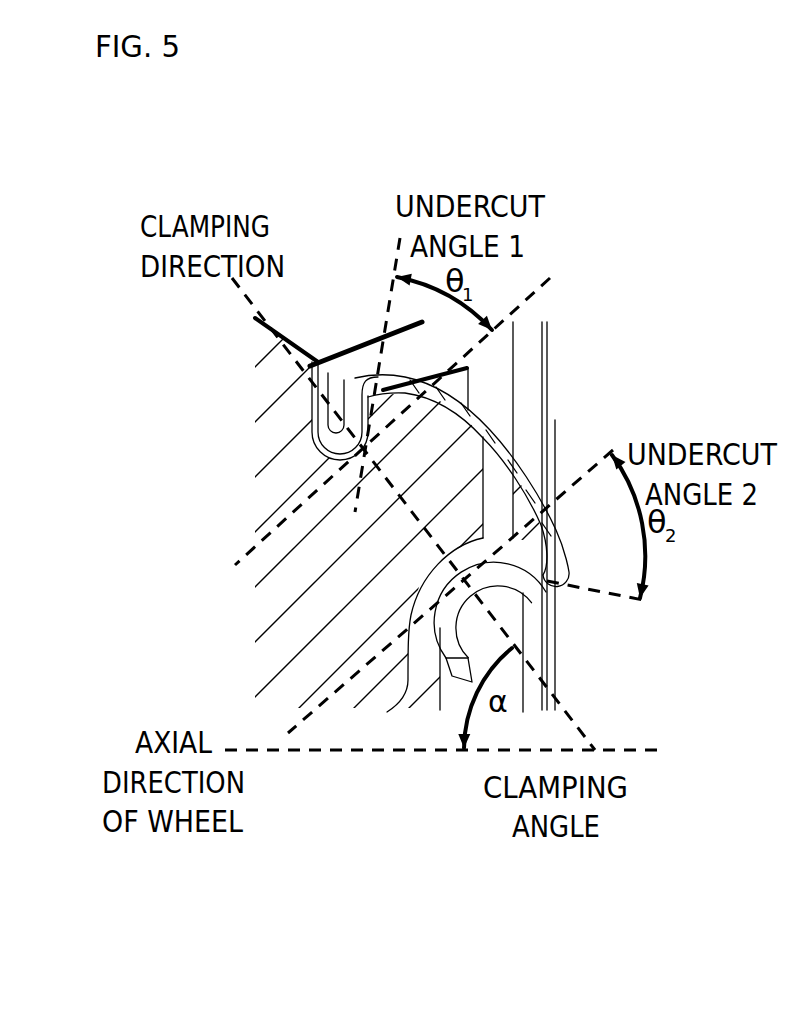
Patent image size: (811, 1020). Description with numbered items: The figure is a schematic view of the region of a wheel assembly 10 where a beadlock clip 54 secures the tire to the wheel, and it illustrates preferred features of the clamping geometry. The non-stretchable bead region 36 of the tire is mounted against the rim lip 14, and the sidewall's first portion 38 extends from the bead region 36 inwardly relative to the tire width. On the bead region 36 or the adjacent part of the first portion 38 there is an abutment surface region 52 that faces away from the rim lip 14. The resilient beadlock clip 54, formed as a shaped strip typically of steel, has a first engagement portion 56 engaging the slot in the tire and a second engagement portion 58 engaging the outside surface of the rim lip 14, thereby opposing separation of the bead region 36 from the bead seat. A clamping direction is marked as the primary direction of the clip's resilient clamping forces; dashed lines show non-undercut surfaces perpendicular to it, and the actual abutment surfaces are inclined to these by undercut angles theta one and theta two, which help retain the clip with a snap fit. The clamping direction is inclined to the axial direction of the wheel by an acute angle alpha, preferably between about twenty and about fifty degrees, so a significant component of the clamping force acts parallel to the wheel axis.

The wheel assembly 10 is at (616, 218).
The rim lip 14 is at (420, 673).
The bead region 36 is at (413, 457).
The first portion 38 is at (268, 330).
The abutment surface region 52 is at (372, 398).
The beadlock clip 54 is at (483, 433).
The first engagement portion 56 is at (333, 420).
The second engagement portion 58 is at (480, 593).